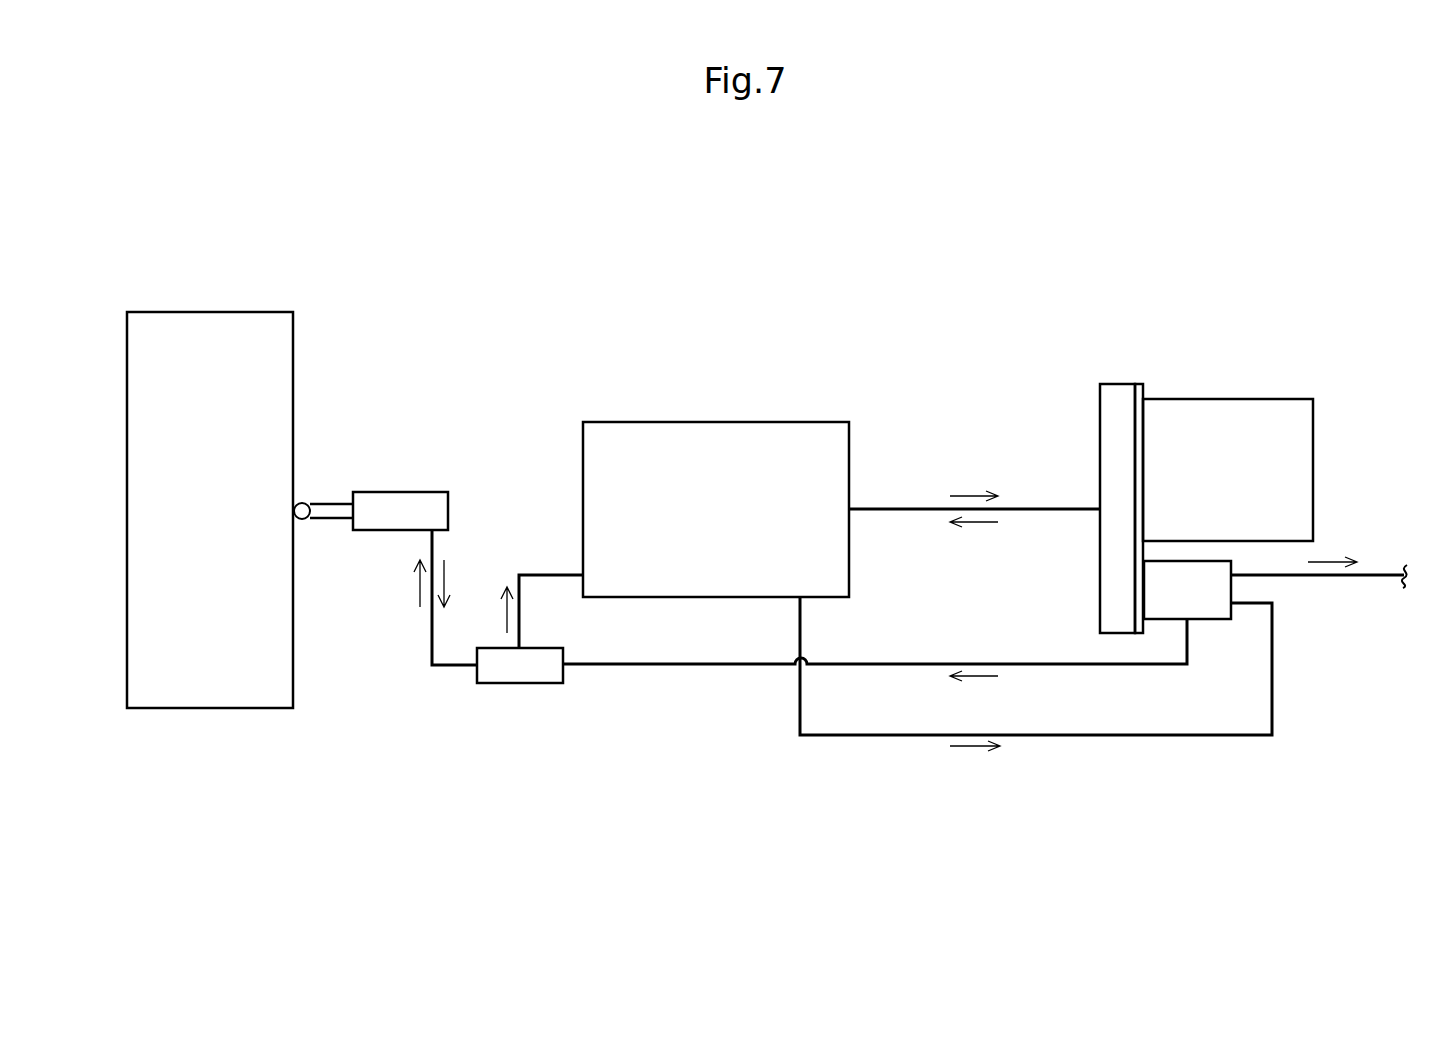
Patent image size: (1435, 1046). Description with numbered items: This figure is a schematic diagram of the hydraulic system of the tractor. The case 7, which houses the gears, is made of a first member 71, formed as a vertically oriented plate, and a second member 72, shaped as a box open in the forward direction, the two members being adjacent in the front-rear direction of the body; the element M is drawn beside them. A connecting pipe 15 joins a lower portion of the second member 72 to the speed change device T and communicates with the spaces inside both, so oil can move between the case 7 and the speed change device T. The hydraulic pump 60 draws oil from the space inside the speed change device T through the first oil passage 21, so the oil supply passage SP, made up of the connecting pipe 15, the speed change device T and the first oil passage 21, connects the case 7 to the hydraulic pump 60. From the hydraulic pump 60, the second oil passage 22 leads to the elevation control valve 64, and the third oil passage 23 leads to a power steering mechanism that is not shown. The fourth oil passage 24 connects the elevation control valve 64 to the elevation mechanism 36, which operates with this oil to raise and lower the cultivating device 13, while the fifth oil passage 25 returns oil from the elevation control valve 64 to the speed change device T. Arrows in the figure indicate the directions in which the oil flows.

The cultivating device 13 is at (208, 312).
The elevation mechanism 36 is at (405, 492).
The fourth oil passage 24 is at (432, 642).
The elevation control valve 64 is at (522, 685).
The fifth oil passage 25 is at (549, 574).
The speed change device T is at (708, 422).
The second oil passage 22 is at (693, 666).
The first oil passage 21 is at (1131, 736).
The oil supply passage SP is at (1050, 750).
The connecting pipe 15 is at (1042, 511).
The case 7 is at (1116, 458).
The second member 72 is at (1107, 458).
The first member 71 is at (1142, 432).
The motor M is at (1268, 403).
The hydraulic pump 60 is at (1215, 612).
The third oil passage 23 is at (1320, 578).